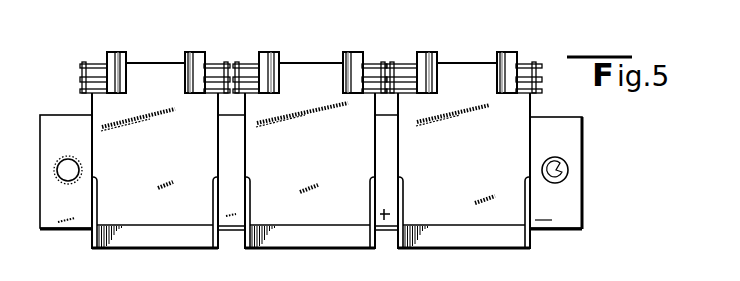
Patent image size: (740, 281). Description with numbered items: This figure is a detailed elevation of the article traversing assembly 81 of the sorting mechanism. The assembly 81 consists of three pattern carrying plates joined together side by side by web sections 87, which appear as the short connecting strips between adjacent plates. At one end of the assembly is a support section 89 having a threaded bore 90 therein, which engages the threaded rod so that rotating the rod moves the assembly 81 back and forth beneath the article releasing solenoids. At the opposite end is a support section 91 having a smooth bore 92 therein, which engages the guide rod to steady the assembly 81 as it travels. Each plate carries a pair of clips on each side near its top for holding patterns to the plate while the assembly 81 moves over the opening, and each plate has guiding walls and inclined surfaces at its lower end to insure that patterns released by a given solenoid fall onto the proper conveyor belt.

The article traversing assembly 81 is at (80, 238).
The web section 87 is at (233, 230).
The support section 89 is at (55, 207).
The threaded bore 90 is at (57, 173).
The support section 91 is at (570, 211).
The smooth bore 92 is at (568, 170).